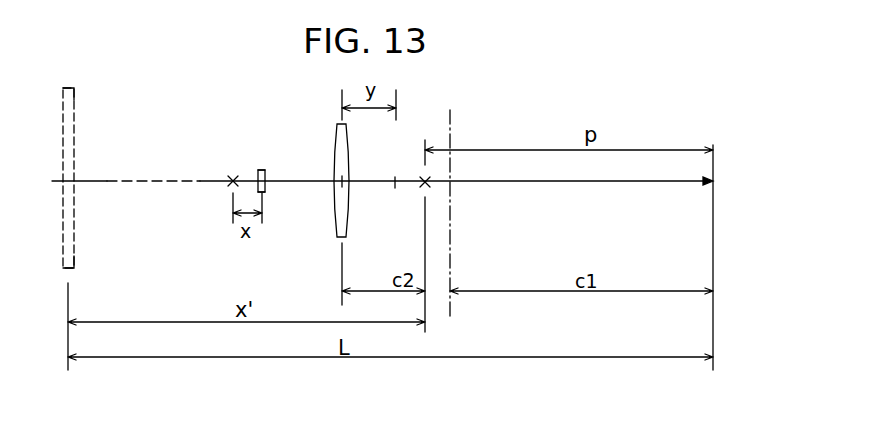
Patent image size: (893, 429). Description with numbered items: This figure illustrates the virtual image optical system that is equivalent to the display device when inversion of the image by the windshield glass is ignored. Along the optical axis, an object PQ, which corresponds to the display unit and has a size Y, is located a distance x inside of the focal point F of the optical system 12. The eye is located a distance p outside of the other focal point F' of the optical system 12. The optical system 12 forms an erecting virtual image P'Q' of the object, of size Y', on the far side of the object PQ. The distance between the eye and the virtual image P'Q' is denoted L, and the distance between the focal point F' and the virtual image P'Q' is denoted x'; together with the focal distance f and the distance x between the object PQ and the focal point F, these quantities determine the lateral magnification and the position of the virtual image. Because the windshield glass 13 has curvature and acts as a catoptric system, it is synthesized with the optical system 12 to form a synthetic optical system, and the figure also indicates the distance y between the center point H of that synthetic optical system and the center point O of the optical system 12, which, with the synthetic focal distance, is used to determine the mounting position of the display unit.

The optical system 12 is at (340, 138).
The windshield glass 13 is at (453, 115).
The focal point F is at (207, 165).
The focal point F' is at (464, 149).
The size of object Y is at (247, 155).
The size of virtual image Y' is at (53, 177).
The object end point P is at (270, 160).
The object end point Q is at (271, 204).
The virtual image end point P' is at (84, 96).
The virtual image end point Q' is at (82, 271).
The center point of optical system O is at (342, 183).
The center point of synthetic optical system H is at (395, 188).